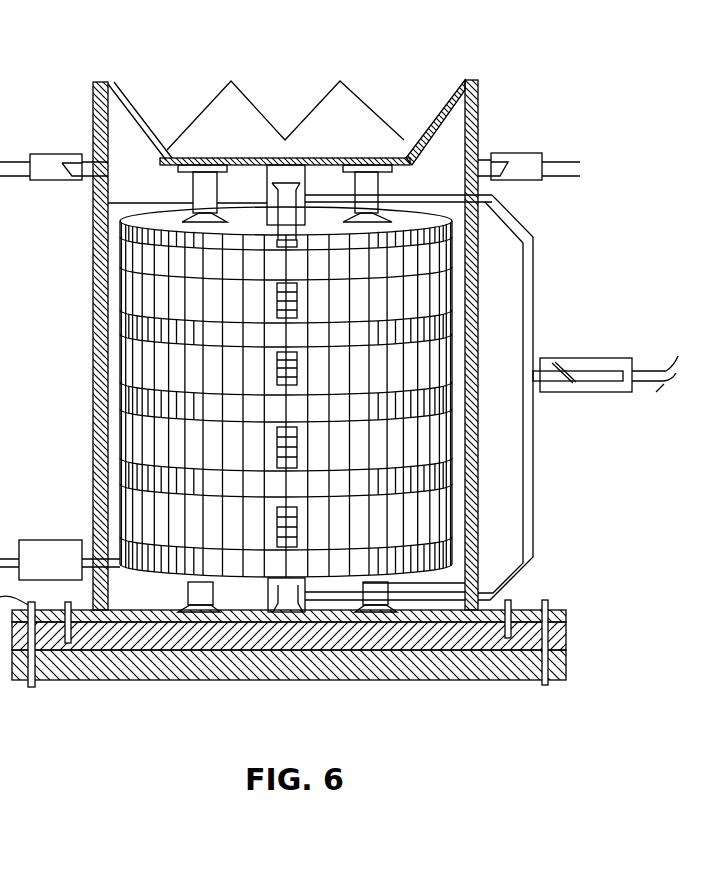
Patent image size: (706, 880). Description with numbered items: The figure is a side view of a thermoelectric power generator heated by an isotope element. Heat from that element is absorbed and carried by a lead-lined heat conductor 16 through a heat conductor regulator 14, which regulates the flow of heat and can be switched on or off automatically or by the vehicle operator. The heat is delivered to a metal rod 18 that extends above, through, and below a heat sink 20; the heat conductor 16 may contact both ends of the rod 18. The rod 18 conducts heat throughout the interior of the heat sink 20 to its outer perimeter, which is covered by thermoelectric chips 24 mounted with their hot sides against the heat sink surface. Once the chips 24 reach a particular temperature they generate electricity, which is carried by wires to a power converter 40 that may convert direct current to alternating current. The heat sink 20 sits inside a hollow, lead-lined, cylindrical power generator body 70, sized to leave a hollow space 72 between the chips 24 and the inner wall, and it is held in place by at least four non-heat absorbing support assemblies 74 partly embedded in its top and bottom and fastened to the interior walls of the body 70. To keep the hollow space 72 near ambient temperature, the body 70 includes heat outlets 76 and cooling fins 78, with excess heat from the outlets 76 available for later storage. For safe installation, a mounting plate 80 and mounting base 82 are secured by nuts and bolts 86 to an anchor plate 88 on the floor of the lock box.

The heat conductor regulator 14 is at (557, 368).
The lead-lined heat conductor 16 is at (528, 262).
The metal rod 18 is at (283, 207).
The heat sink 20 is at (137, 213).
The thermoelectric chips 24 is at (120, 231).
The power converter 40 is at (43, 540).
The thermoelectric power generator body 70 is at (93, 345).
The hollow space 72 is at (452, 578).
The non-heat absorbing support assemblies 74 is at (200, 187).
The heat outlets 76 is at (57, 152).
The cooling fins 78 is at (430, 112).
The mounting plate 80 is at (520, 605).
The mounting base 82 is at (317, 666).
The bolts 86 is at (545, 683).
The anchor plate 88 is at (98, 683).